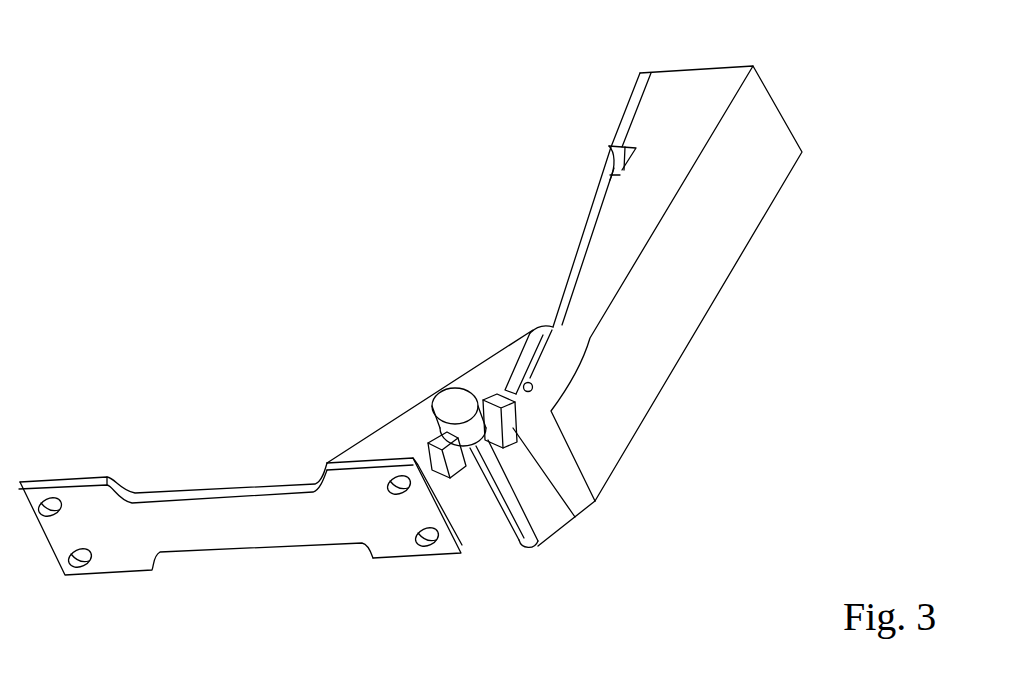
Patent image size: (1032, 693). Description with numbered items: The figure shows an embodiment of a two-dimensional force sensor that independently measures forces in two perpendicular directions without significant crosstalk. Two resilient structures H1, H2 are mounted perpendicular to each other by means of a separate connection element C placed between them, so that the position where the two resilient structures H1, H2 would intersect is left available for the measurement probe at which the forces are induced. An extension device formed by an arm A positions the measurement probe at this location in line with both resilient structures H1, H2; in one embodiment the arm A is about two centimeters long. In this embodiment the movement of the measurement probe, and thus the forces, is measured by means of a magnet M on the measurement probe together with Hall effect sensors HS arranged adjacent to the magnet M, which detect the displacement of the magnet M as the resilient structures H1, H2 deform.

The arm A is at (636, 306).
The resilient structure H1 is at (196, 519).
The resilient structure H2 is at (579, 215).
The connection element C is at (405, 508).
The magnet M is at (448, 399).
The Hall effect sensors HS is at (461, 465).